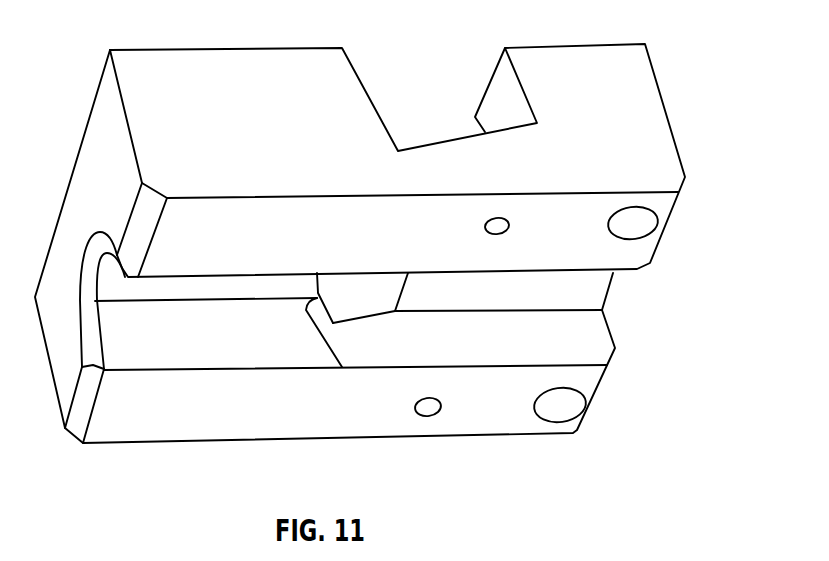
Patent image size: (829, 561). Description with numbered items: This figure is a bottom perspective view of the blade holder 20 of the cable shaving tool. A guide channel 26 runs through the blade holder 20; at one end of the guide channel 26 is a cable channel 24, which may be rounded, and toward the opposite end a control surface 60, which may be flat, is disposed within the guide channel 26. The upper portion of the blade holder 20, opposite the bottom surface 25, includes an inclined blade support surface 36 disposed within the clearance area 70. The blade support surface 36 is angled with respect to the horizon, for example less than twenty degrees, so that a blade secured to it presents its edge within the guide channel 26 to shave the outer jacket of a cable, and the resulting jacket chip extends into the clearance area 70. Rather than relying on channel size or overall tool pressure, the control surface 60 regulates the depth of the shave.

The blade holder 20 is at (275, 117).
The cable channel 24 is at (122, 302).
The bottom surface 25 is at (345, 228).
The guide channel 26 is at (238, 323).
The blade support surface 36 is at (430, 142).
The control surface 60 is at (572, 284).
The clearance area 70 is at (365, 298).